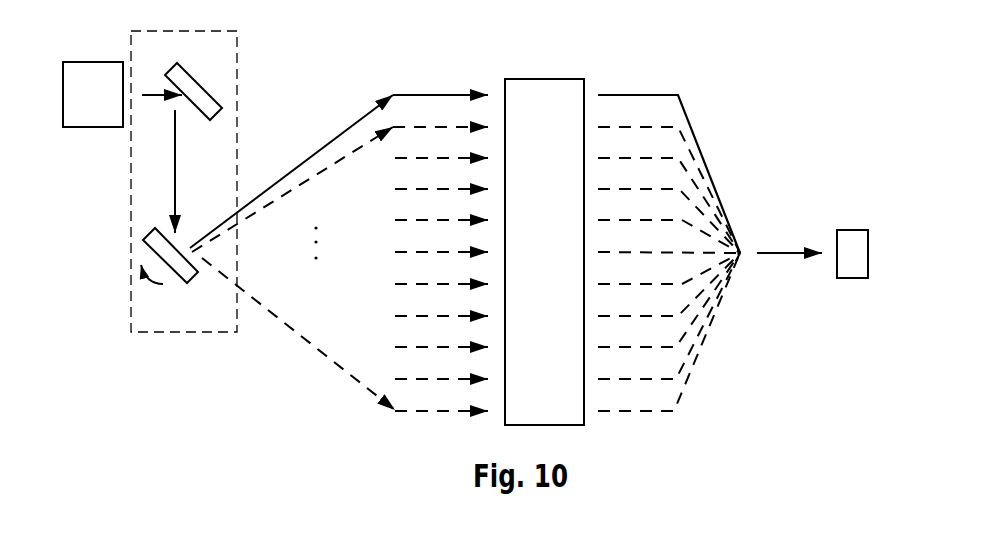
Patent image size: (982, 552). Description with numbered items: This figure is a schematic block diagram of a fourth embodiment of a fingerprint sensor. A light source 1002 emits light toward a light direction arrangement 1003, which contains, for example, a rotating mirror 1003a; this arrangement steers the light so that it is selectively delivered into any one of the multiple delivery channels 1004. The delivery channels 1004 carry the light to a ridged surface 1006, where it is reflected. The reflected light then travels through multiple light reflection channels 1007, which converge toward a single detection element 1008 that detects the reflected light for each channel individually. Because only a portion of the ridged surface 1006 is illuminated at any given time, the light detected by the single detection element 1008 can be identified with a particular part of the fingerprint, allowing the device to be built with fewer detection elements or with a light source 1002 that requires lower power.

The light source 1002 is at (112, 127).
The light direction arrangement 1003 is at (205, 333).
The rotating mirror 1003a is at (198, 283).
The delivery channels 1004 is at (432, 80).
The ridged surface 1006 is at (552, 79).
The light reflection channels 1007 is at (635, 73).
The single detection element 1008 is at (858, 230).